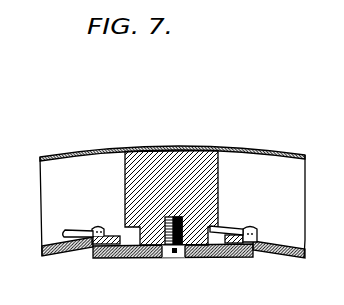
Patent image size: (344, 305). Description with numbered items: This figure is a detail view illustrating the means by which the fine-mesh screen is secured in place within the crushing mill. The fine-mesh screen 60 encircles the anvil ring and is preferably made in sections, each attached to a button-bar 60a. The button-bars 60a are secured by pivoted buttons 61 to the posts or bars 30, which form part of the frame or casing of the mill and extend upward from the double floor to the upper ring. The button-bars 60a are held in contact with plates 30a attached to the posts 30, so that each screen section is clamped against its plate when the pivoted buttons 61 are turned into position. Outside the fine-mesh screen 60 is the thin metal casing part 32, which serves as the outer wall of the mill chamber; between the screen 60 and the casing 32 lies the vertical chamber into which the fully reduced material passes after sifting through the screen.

The post 30 is at (197, 152).
The plate 30a is at (148, 255).
The thin metal casing part 32 is at (84, 148).
The fine-mesh screen 60 is at (68, 256).
The button-bar 60a is at (275, 222).
The pivoted button 61 is at (73, 228).